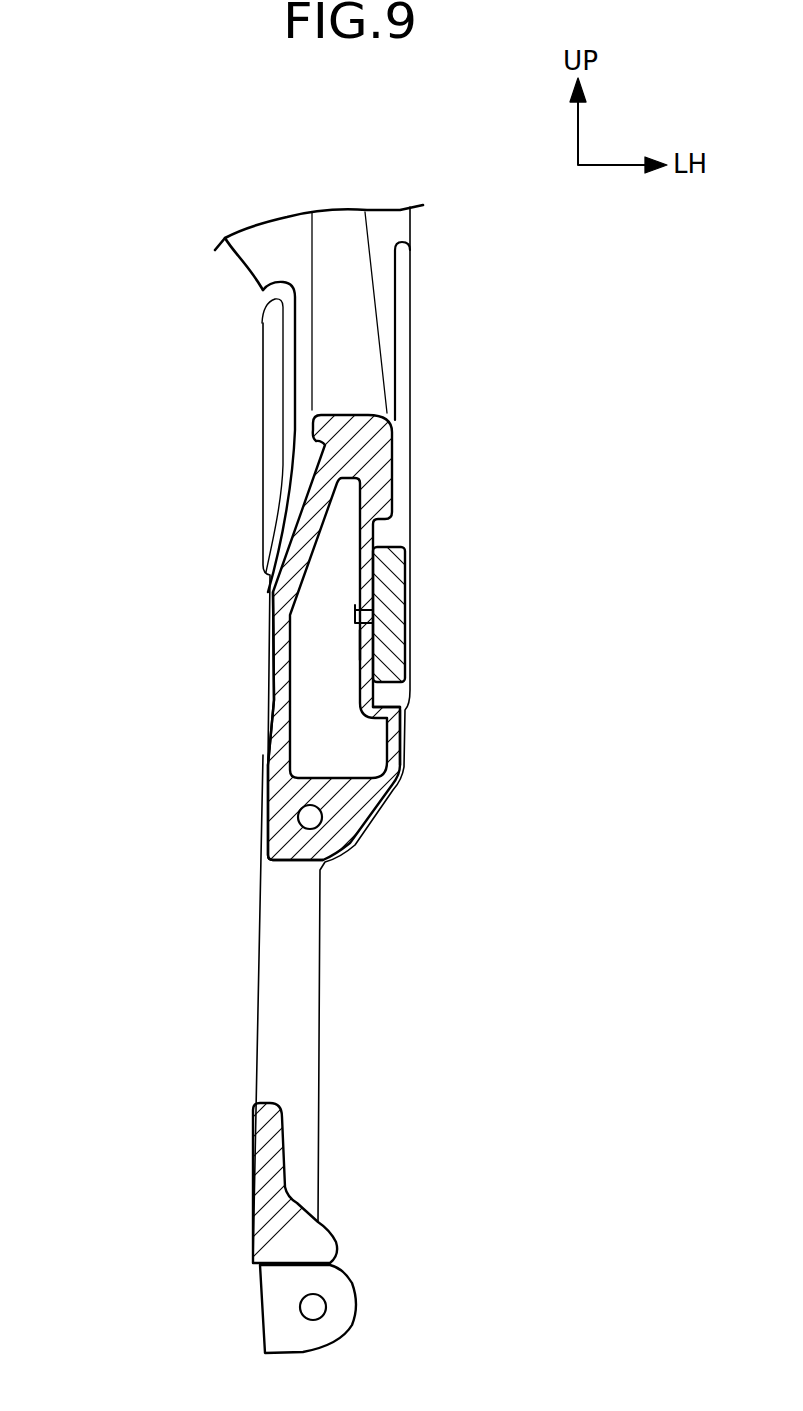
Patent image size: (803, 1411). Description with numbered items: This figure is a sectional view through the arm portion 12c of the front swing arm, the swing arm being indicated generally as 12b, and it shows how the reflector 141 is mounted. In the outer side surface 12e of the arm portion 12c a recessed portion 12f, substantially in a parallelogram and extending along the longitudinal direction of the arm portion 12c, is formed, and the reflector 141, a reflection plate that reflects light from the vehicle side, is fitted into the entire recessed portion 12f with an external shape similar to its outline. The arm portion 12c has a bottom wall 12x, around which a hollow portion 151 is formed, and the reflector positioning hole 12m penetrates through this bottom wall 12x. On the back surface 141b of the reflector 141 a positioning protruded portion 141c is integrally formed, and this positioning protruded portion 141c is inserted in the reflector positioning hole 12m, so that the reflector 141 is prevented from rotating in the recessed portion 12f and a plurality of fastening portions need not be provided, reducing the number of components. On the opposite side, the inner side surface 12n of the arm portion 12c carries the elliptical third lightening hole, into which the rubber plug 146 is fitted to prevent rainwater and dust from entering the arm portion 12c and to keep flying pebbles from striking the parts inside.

The bracket 12b is at (163, 292).
The arm portion 12c is at (298, 232).
The rubber plug 146 is at (270, 382).
The reflector 141 is at (410, 485).
The back surface 141b is at (372, 572).
The positioning protruded portion 141c is at (355, 612).
The reflector positioning hole 12m is at (367, 622).
The bottom wall 12x is at (367, 637).
The recessed portion 12f is at (400, 693).
The outer side surface 12e is at (400, 740).
The inner side surface 12n is at (277, 697).
The hollow portion 151 is at (310, 733).